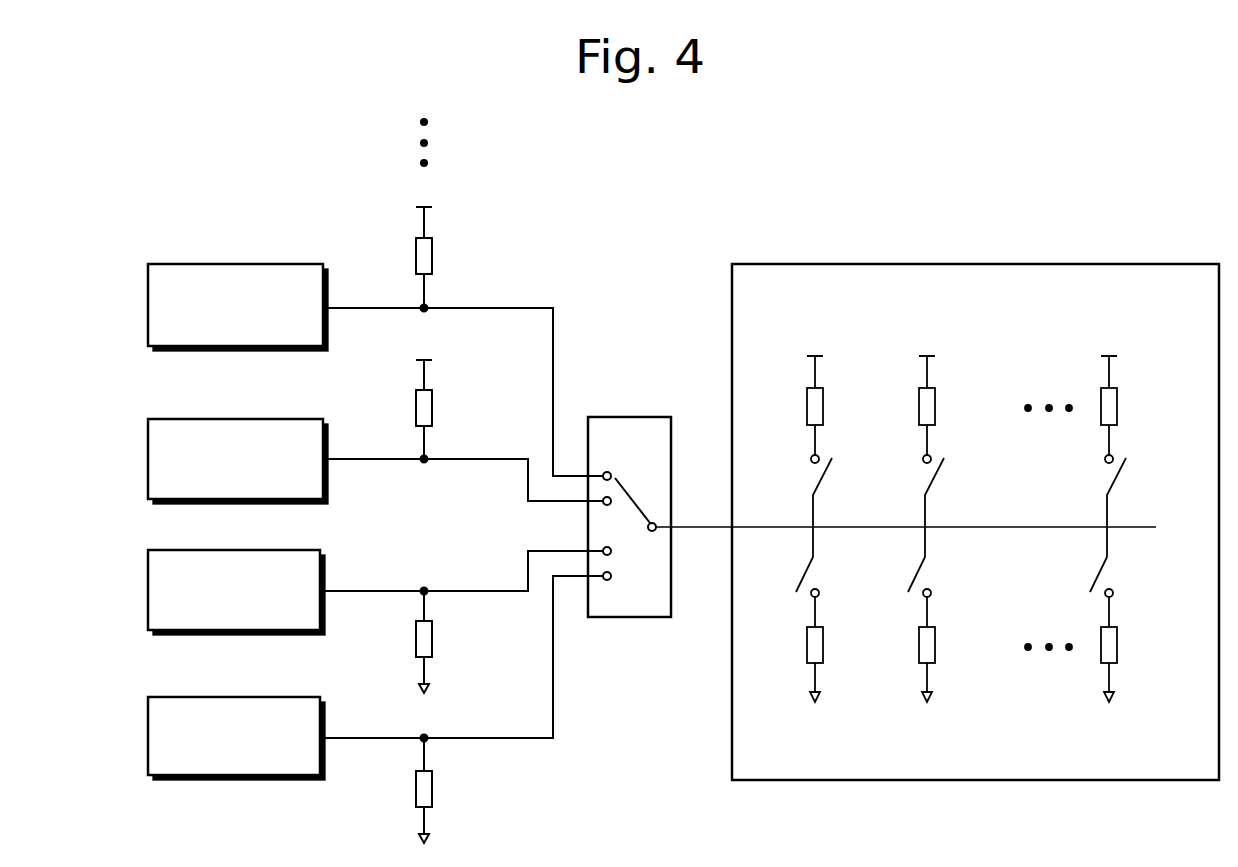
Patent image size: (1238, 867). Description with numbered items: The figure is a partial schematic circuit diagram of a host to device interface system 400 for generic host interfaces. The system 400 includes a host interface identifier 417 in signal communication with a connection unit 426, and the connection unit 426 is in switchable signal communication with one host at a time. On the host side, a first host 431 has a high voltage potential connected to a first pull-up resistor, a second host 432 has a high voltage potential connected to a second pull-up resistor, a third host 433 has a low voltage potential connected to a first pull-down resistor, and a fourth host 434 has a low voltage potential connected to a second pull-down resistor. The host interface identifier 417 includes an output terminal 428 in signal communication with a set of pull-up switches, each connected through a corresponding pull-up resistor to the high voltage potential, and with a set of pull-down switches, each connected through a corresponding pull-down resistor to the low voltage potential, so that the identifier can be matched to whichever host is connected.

The interface system 400 is at (646, 238).
The host interface identifier 417 is at (957, 301).
The connection unit 426 is at (614, 452).
The output terminal 428 is at (657, 514).
The first host 431 is at (139, 312).
The second host 432 is at (139, 463).
The third host 433 is at (139, 596).
The fourth host 434 is at (139, 744).